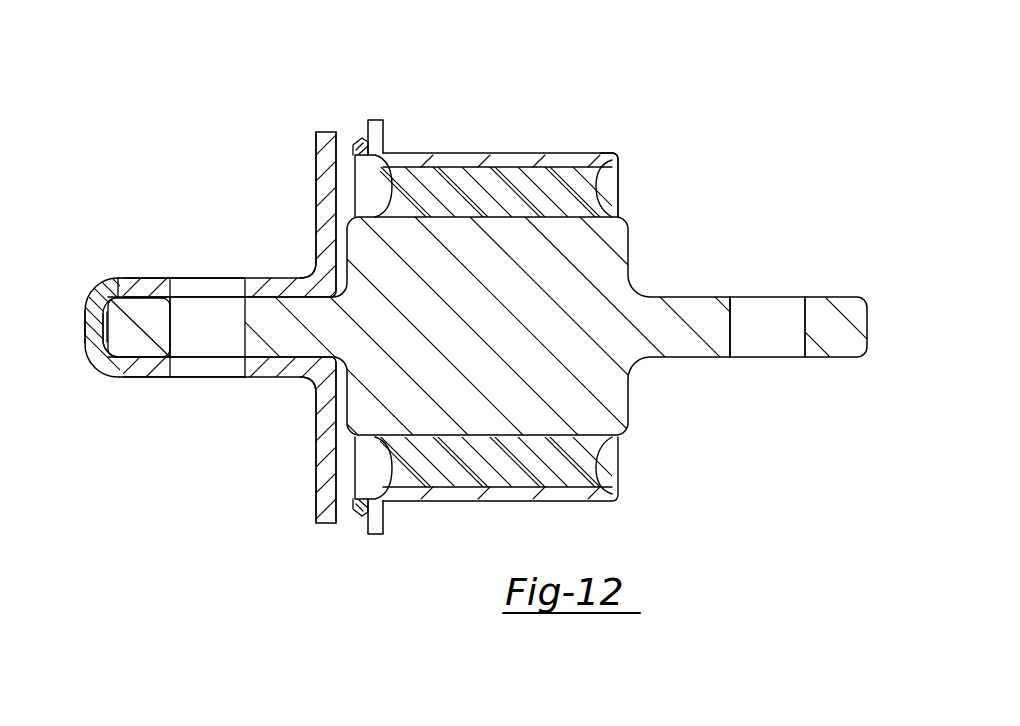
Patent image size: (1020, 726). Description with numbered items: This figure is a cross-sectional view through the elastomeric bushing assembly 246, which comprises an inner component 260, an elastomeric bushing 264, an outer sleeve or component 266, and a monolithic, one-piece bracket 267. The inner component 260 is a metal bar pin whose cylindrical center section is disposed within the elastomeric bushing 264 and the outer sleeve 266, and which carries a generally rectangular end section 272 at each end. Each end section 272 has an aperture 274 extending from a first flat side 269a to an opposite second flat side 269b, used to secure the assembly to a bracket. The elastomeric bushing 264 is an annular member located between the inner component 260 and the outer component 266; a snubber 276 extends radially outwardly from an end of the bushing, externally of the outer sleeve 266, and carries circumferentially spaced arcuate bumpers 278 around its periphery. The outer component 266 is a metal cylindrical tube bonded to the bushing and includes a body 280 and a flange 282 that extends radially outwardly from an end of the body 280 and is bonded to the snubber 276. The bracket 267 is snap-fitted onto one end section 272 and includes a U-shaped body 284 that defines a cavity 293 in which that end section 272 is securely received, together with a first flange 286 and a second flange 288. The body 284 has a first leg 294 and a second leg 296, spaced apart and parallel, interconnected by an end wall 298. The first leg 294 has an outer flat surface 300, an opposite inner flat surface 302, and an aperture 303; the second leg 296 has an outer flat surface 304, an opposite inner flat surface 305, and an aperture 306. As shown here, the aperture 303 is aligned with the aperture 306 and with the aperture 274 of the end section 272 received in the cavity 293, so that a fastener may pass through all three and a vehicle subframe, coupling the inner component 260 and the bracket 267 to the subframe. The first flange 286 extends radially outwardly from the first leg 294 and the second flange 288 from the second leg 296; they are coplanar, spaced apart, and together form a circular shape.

The elastomeric bushing assembly 246 is at (540, 117).
The inner component 260 is at (690, 295).
The elastomeric bushing 264 is at (616, 472).
The outer sleeve 266 is at (602, 155).
The bracket 267 is at (247, 258).
The first flat side 269a is at (820, 296).
The second flat side 269b is at (836, 357).
The end section 272 is at (120, 292).
The aperture 274 is at (732, 337).
The snubber 276 is at (375, 535).
The bumpers 278 is at (360, 140).
The body 280 is at (513, 153).
The flange 282 is at (378, 120).
The body 284 is at (72, 337).
The first flange 286 is at (323, 132).
The second flange 288 is at (325, 523).
The cavity 293 is at (86, 305).
The first leg 294 is at (267, 266).
The second leg 296 is at (265, 390).
The end wall 298 is at (100, 318).
The outer flat surface 300 is at (170, 323).
The inner flat surface 302 is at (170, 323).
The aperture 303 is at (243, 290).
The outer flat surface 304 is at (150, 377).
The inner flat surface 305 is at (110, 360).
The aperture 306 is at (238, 362).